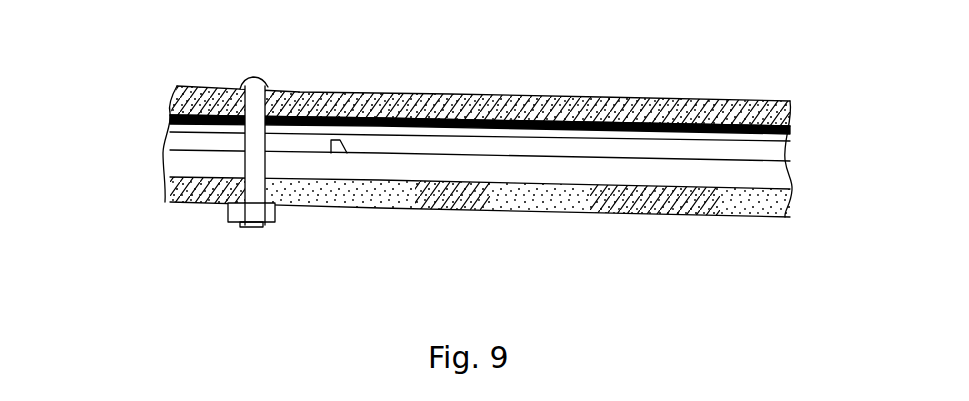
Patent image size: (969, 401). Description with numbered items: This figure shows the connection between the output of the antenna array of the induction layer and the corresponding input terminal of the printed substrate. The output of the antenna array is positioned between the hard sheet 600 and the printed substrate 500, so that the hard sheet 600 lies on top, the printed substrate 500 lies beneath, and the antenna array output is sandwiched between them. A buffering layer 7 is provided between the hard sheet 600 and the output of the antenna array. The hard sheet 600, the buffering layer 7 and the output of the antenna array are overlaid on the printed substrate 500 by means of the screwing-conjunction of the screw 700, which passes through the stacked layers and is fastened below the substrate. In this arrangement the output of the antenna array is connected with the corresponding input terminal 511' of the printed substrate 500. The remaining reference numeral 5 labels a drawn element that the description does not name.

The screw 700 is at (268, 83).
The hard sheet 600 is at (443, 92).
The buffering layer 7 is at (797, 122).
The input terminal 511' is at (386, 223).
The panel 5 is at (577, 137).
The printed substrate 500 is at (722, 177).